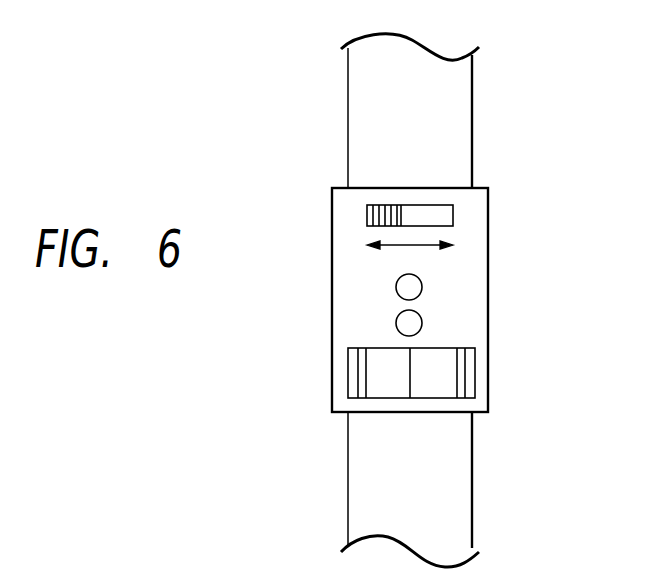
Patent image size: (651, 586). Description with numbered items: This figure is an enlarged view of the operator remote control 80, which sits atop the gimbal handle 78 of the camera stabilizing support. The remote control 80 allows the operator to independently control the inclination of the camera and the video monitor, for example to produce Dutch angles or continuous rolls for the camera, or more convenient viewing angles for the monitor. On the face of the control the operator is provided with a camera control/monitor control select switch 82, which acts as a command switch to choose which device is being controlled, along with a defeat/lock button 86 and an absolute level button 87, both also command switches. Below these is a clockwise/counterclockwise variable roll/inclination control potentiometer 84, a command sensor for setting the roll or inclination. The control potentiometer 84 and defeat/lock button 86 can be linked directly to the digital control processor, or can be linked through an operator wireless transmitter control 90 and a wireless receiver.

The gimbal handle 78 is at (438, 128).
The operator remote control 80 is at (332, 305).
The operator wireless transmitter control 90 is at (349, 265).
The camera control/monitor control select switch 82 is at (445, 213).
The defeat/lock button 86 is at (415, 287).
The absolute level button 87 is at (415, 323).
The clockwise/counterclockwise variable roll/inclination control potentiometer 84 is at (437, 372).